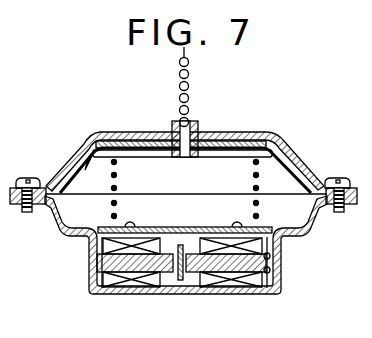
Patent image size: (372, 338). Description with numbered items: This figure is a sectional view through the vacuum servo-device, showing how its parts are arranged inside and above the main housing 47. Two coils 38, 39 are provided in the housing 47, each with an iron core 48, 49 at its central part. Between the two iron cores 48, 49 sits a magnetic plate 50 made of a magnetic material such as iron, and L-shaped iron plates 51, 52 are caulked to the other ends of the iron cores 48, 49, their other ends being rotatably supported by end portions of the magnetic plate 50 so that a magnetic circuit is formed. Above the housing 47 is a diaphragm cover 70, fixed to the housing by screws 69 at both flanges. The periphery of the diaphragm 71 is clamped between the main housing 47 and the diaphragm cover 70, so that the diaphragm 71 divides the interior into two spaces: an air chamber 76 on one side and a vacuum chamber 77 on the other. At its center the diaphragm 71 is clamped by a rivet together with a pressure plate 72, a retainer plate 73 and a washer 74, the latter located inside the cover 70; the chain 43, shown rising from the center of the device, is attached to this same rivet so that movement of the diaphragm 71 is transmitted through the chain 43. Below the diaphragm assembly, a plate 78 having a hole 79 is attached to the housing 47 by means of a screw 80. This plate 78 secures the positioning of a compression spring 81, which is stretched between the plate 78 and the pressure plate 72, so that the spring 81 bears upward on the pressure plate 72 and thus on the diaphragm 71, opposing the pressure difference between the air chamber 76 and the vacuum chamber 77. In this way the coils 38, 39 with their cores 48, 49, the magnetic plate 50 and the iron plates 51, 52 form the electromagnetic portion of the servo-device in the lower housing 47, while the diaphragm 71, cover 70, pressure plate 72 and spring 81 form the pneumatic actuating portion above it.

The coil 38 is at (150, 275).
The coil 39 is at (247, 278).
The chain 43 is at (191, 84).
The main housing 47 is at (78, 236).
The iron core 48 is at (135, 262).
The iron core 49 is at (265, 280).
The magnetic plate 50 is at (183, 272).
The L-shaped iron plate 51 is at (100, 270).
The L-shaped iron plate 52 is at (275, 266).
The screw 69 is at (32, 179).
The diaphragm cover 70 is at (288, 132).
The diaphragm 71 is at (299, 158).
The pressure plate 72 is at (142, 158).
The retainer plate 73 is at (130, 135).
The washer 74 is at (197, 128).
The air chamber 76 is at (72, 148).
The vacuum chamber 77 is at (88, 162).
The plate 78 is at (158, 228).
The hole 79 is at (194, 230).
The screw 80 is at (130, 226).
The compression spring 81 is at (252, 175).